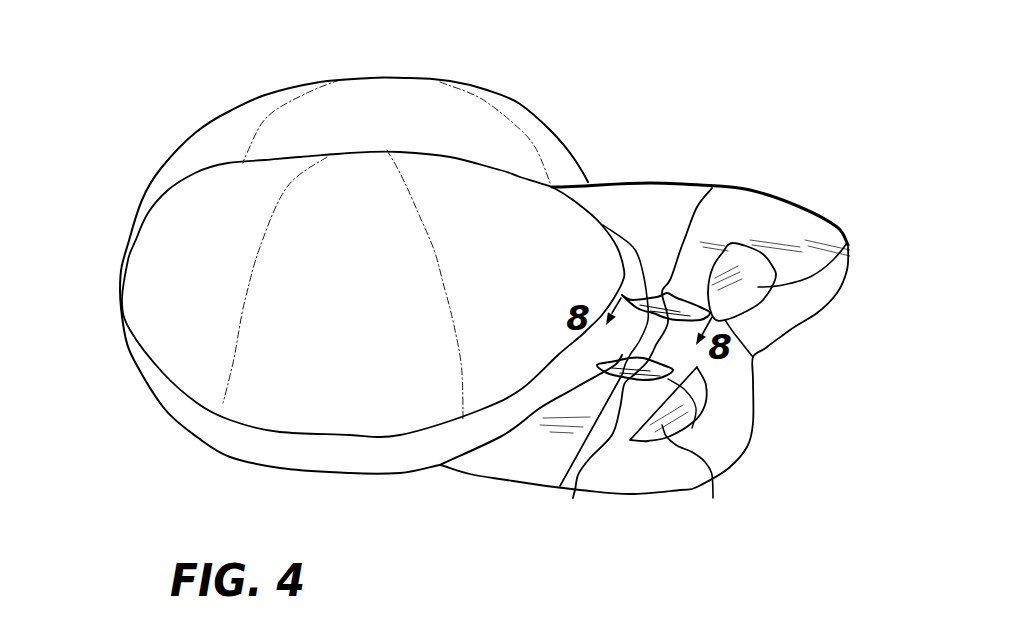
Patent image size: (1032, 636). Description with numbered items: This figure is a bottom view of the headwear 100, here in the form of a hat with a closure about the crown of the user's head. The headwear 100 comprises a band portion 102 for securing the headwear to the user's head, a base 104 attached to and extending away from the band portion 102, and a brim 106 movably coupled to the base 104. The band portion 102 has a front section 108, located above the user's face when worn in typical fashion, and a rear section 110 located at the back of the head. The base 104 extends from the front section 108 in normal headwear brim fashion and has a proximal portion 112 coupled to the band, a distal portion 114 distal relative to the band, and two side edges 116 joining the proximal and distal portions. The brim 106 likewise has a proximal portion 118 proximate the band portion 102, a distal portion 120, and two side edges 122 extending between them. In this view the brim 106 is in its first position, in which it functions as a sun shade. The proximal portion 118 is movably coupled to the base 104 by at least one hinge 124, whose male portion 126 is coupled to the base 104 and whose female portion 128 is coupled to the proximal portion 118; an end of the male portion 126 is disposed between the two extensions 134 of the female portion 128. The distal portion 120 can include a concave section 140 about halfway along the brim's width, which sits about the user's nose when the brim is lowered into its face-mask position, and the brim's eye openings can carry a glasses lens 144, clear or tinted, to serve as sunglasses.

The headwear 100 is at (560, 56).
The band portion 102 is at (193, 452).
The base 104 is at (513, 484).
The brim 106 is at (793, 223).
The front section 108 is at (428, 440).
The rear section 110 is at (130, 347).
The proximal portion 112 is at (590, 207).
The distal portion 114 is at (687, 210).
The side edges 116 is at (673, 187).
The proximal portion 118 is at (740, 183).
The distal portion 120 is at (795, 351).
The side edges 122 is at (840, 240).
The hinge 124 is at (612, 292).
The male portion 126 is at (609, 225).
The female portion 128 is at (753, 357).
The extensions 134 is at (665, 292).
The concave section 140 is at (755, 413).
The glasses lens 144 is at (850, 243).